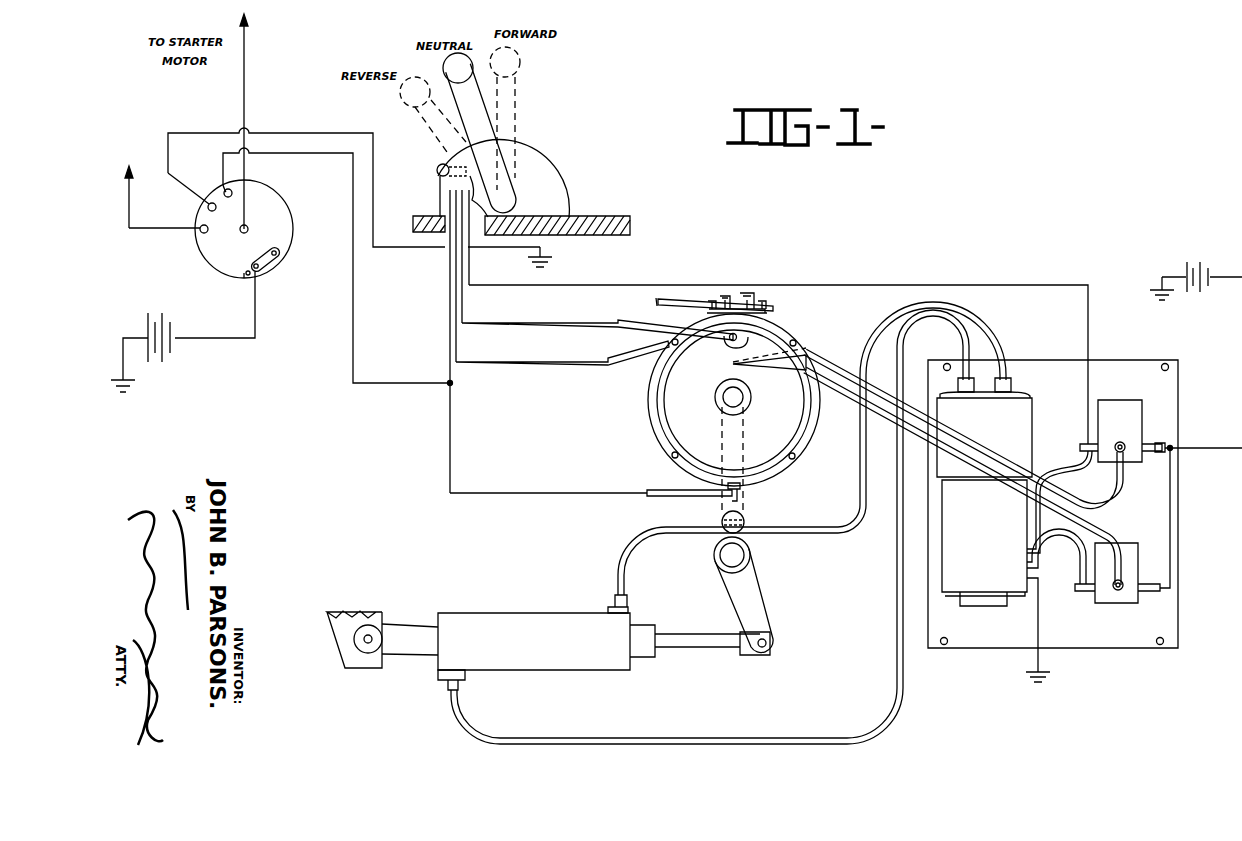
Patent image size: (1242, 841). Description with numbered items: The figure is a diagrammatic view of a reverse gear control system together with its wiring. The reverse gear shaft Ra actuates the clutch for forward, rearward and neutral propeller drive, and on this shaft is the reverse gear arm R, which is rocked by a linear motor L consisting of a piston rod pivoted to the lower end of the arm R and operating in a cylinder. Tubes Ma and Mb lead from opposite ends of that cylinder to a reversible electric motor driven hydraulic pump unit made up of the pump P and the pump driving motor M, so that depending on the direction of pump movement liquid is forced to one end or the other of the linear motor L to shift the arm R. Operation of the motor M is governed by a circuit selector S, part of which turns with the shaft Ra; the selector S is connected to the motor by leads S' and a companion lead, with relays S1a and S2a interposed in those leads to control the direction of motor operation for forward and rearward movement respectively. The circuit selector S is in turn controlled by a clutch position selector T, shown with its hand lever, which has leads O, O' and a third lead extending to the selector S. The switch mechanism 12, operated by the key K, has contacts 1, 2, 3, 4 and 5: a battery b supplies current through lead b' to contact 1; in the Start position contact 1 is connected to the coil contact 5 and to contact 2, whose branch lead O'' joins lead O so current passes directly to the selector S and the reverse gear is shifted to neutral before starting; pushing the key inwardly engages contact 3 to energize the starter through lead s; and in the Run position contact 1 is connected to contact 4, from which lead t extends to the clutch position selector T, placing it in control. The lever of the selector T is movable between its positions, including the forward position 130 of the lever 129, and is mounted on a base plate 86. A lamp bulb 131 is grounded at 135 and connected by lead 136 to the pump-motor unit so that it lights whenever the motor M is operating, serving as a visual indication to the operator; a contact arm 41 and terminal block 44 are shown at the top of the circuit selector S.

The starter motor lead s is at (246, 103).
The ignition switch 12 is at (291, 231).
The switch contact 1 is at (245, 283).
The contact 2 is at (233, 199).
The contact 3 is at (249, 228).
The contact 4 is at (208, 200).
The coil contact 5 is at (197, 223).
The switch key K is at (282, 262).
The lead b' is at (215, 306).
The battery b is at (153, 352).
The forward position of lever 130 is at (470, 68).
The control lever 129 is at (477, 104).
The clutch position selector T is at (560, 170).
The lamp bulb 131 is at (434, 172).
The mounting plate 86 is at (604, 217).
The ground 135 is at (546, 251).
The lead t is at (380, 254).
The lead 136 is at (617, 287).
The contact arm 41 is at (686, 304).
The terminal block 44 is at (753, 300).
The branch lead O'' is at (338, 267).
The lead O' is at (562, 366).
The lead O is at (591, 486).
The circuit selector S is at (734, 407).
The lead S' is at (963, 442).
The reverse gear shaft Ra is at (744, 398).
The tube Ma is at (784, 536).
The tube Mb is at (896, 630).
The linear motor L is at (512, 621).
The reverse gear arm R is at (753, 605).
The hydraulic pump P is at (990, 436).
The pump driving motor M is at (994, 543).
The relay S1a is at (1140, 410).
The relay S2a is at (1137, 558).